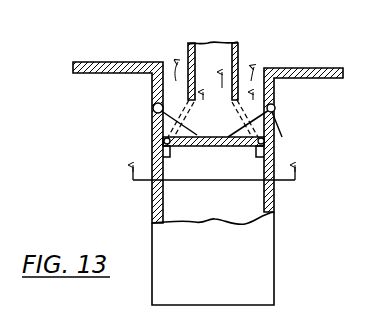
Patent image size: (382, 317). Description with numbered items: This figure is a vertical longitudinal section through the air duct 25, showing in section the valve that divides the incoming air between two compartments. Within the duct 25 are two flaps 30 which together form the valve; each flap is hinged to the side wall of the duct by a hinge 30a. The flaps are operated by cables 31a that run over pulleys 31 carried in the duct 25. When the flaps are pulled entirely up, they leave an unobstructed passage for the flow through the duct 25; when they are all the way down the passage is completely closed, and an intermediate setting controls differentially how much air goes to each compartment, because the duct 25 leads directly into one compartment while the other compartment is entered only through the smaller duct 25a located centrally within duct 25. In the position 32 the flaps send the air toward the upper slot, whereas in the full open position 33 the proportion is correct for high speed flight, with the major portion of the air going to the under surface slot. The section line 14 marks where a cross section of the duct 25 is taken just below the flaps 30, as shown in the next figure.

The section line 14- 14 is at (215, 169).
The duct 25 is at (274, 237).
The duct 25a is at (218, 58).
The flaps 30 is at (180, 148).
The hinges 30a is at (264, 139).
The pulleys 31 is at (279, 106).
The cables 31a is at (282, 137).
The flap position 32 is at (248, 121).
The full open position 33 is at (155, 106).